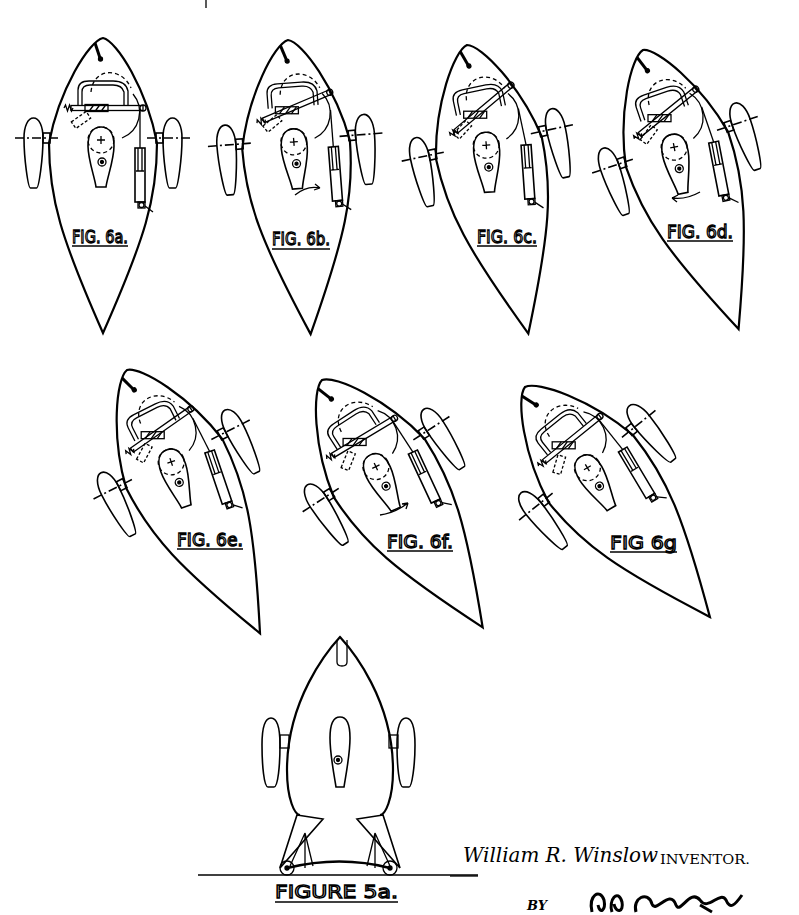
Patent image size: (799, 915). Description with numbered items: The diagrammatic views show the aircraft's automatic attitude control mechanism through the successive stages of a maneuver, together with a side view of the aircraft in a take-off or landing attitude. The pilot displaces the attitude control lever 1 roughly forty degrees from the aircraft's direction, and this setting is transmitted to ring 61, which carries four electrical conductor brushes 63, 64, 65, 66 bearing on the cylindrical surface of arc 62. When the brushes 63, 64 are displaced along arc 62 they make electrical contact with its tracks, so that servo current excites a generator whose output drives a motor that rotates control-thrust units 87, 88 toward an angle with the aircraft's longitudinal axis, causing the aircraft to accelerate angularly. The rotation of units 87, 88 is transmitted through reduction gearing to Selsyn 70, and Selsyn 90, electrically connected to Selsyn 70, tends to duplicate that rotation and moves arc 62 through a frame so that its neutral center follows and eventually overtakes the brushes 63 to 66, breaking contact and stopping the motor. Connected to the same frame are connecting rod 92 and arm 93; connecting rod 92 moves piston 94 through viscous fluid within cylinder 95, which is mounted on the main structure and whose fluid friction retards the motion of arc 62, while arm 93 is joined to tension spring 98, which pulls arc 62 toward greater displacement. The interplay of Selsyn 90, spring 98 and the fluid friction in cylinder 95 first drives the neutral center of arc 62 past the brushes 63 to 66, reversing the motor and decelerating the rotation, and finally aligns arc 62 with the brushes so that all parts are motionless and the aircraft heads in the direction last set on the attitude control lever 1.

The attitude control lever 1 is at (293, 67).
The tension spring 98 is at (297, 76).
The arm 93 is at (270, 100).
The electrical conductor brush 63 is at (351, 90).
The electrical conductor brush 64 is at (295, 107).
The electrical conductor brush 65 is at (295, 107).
The electrical conductor brush 66 is at (325, 98).
The arc 62 is at (312, 105).
The ring 61 is at (333, 108).
The Selsyn 90 is at (315, 135).
The Selsyn 70 is at (368, 126).
The connecting rod 92 is at (338, 153).
The cylinder 95 is at (342, 165).
The piston 94 is at (308, 162).
The control-thrust unit 87 is at (381, 214).
The control-thrust unit 88 is at (340, 200).